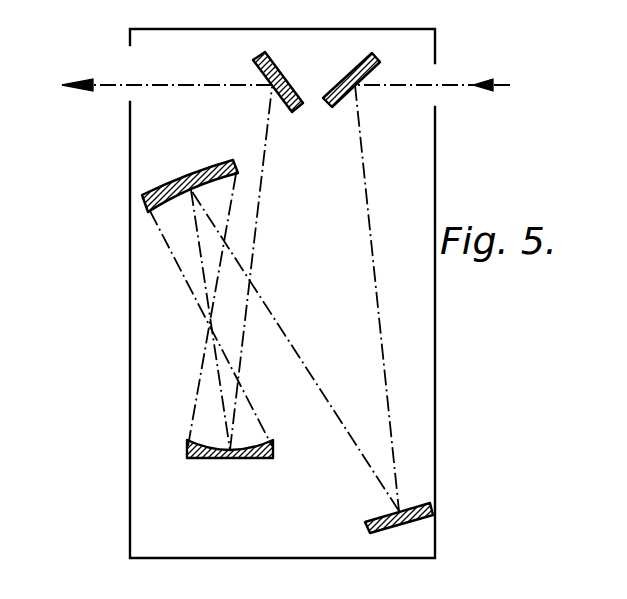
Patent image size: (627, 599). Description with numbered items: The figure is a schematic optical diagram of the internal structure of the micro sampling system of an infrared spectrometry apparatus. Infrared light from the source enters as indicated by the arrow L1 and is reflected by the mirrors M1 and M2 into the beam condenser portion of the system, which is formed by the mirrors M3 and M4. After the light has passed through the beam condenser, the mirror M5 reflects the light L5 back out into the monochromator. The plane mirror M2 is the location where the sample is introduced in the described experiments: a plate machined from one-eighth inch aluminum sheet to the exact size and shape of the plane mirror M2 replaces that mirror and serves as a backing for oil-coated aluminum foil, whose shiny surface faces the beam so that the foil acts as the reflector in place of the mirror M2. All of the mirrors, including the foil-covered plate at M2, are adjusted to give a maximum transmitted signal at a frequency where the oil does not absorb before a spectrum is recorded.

The mirror M1 is at (351, 72).
The plane mirror M2 is at (385, 526).
The beam condenser mirror M3 is at (190, 186).
The beam condenser mirror M4 is at (230, 462).
The mirror M5 is at (278, 75).
The infrared light from the source L1 is at (433, 76).
The light reflected back into the monochromator L5 is at (167, 76).